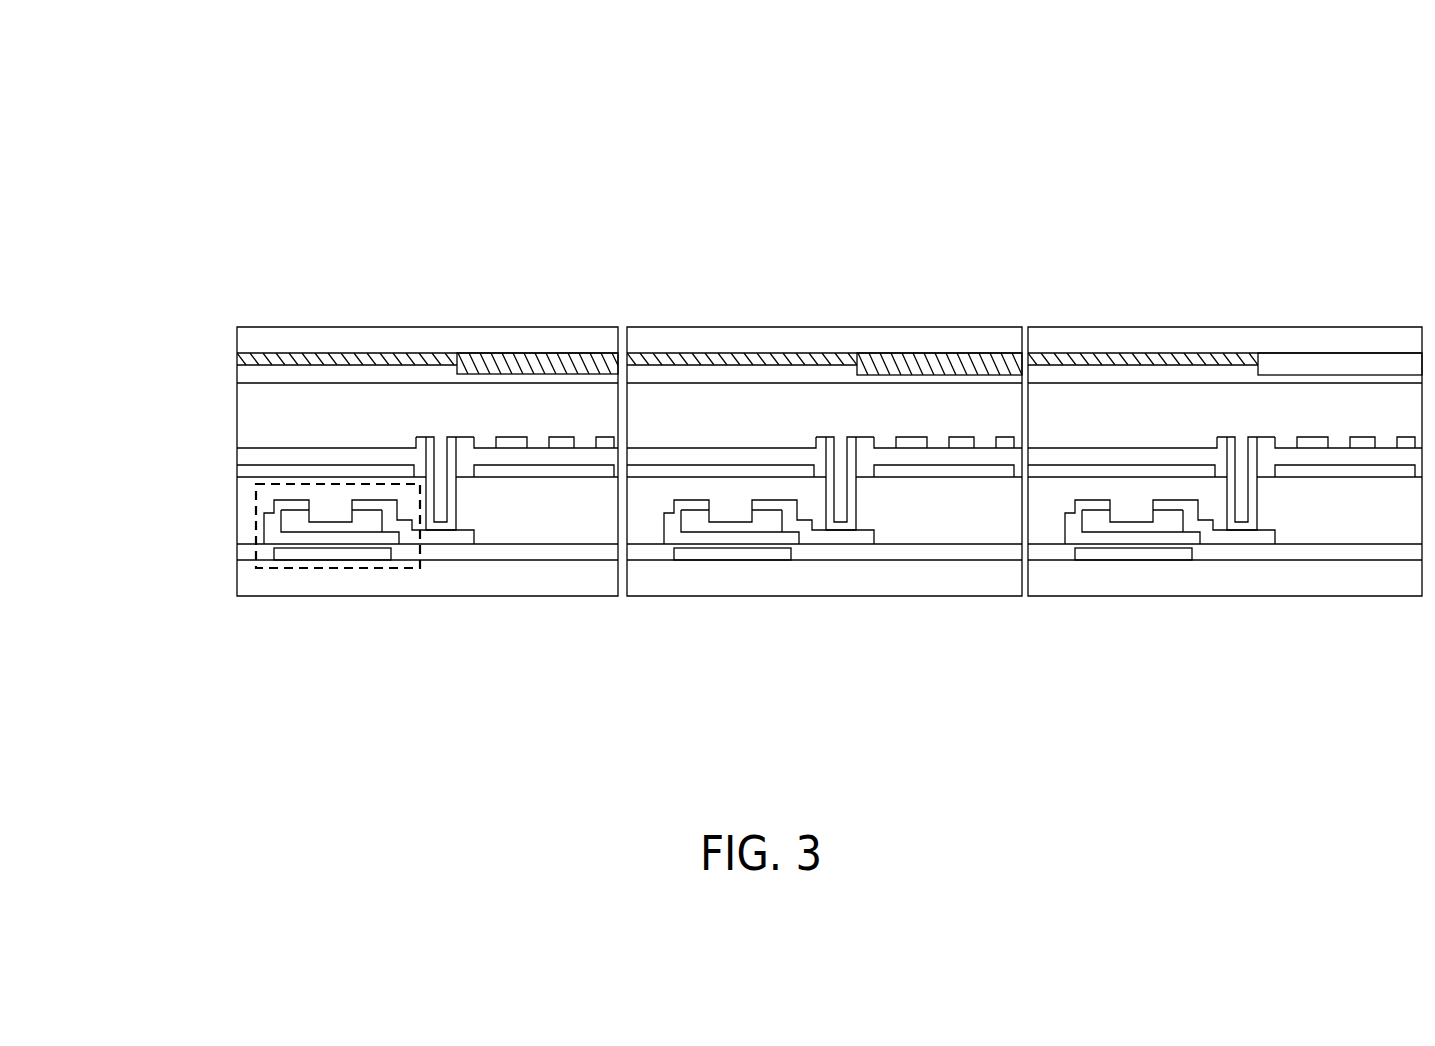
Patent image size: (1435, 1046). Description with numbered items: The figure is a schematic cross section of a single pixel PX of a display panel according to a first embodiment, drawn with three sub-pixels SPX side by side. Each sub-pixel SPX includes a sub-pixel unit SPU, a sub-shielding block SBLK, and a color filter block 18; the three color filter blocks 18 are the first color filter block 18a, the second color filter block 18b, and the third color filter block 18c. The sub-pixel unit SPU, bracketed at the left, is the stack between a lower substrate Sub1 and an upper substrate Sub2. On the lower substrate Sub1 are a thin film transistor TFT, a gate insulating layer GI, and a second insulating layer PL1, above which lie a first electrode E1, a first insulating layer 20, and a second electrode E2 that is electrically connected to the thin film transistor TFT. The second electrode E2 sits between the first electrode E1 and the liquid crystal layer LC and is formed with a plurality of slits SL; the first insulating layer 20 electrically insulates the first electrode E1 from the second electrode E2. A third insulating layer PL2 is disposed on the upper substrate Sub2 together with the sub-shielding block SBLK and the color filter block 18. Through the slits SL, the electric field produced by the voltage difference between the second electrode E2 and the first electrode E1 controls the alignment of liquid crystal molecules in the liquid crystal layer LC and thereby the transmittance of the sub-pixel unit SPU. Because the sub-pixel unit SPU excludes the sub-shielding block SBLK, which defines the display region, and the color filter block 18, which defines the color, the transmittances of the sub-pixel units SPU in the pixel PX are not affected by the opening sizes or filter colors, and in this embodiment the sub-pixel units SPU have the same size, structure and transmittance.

The upper substrate Sub2 is at (258, 342).
The third insulating layer PL2 is at (260, 373).
The liquid crystal layer LC is at (280, 412).
The first insulating layer 20 is at (245, 458).
The second electrode E2 is at (510, 442).
The first electrode E1 is at (507, 469).
The second insulating layer PL1 is at (243, 508).
The thin film transistor TFT is at (242, 553).
The gate insulating layer GI is at (228, 553).
The lower substrate Sub1 is at (276, 587).
The sub-pixel unit SPU is at (132, 652).
The sub-shielding block SBLK is at (342, 357).
The color filter block 18 is at (927, 295).
The first color filter block 18a is at (474, 357).
The second color filter block 18b is at (905, 367).
The third color filter block 18c is at (1320, 367).
The slit SL is at (494, 428).
The sub-pixel SPX is at (618, 640).
The pixel PX is at (1260, 148).